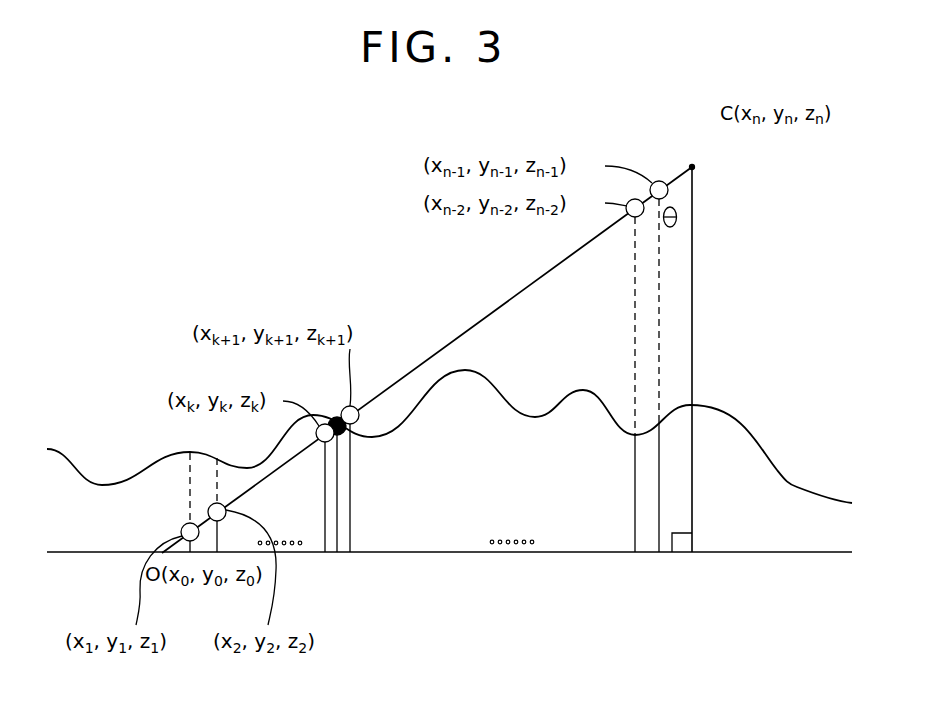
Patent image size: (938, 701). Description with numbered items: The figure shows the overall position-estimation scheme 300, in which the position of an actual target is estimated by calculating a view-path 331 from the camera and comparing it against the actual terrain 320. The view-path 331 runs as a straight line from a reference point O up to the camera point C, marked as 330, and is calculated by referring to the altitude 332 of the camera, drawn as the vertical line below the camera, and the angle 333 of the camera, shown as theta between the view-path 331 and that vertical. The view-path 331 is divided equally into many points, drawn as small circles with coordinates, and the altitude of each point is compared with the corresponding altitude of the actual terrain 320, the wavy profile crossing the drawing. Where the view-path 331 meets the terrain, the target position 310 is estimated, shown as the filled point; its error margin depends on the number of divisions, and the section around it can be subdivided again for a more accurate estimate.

The image illustrating sampled points on a path 300 is at (82, 125).
The position of the target 310 is at (336, 416).
The actual terrain 320 is at (741, 422).
The target point C 330 is at (692, 164).
The view-path 331 is at (415, 366).
The altitude 332 is at (692, 300).
The angle 333 is at (680, 217).